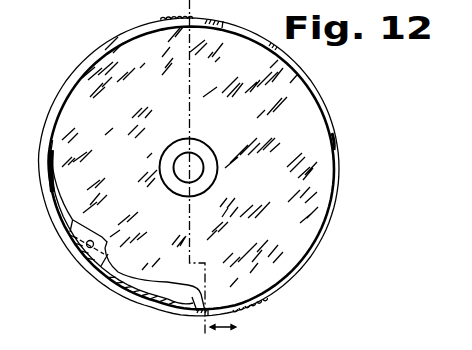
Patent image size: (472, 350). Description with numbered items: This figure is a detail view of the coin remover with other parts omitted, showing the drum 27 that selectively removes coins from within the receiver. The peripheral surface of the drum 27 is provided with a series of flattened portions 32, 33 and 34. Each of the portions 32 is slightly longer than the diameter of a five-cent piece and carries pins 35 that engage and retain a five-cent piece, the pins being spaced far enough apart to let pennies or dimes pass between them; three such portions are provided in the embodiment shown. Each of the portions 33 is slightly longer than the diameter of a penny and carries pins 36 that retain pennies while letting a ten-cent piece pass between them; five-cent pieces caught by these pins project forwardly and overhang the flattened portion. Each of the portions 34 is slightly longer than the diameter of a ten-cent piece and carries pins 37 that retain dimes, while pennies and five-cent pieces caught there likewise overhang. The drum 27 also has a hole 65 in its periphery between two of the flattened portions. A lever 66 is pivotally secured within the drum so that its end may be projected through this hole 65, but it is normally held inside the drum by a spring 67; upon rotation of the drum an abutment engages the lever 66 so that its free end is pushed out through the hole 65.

The drum 27 is at (190, 157).
The flattened portions 32 is at (74, 81).
The flattened portions 33 is at (273, 300).
The flattened portions 34 is at (306, 75).
The pins 35 is at (345, 182).
The pins 36 is at (226, 168).
The pins 37 is at (318, 86).
The hole 65 is at (259, 43).
The lever 66 is at (167, 282).
The spring 67 is at (58, 206).